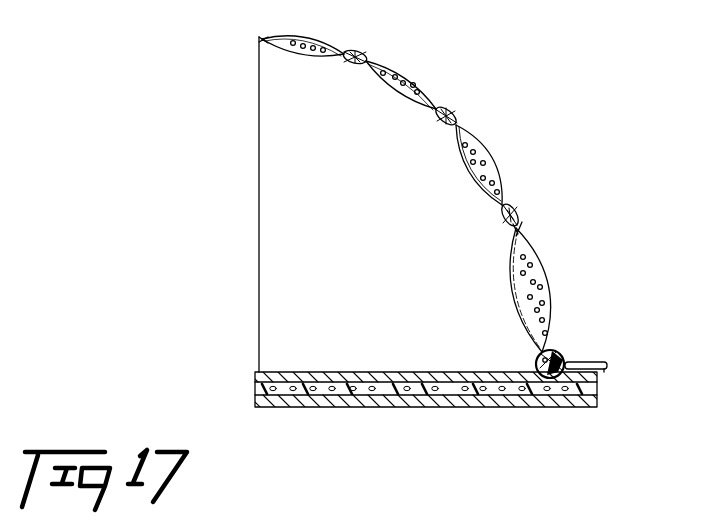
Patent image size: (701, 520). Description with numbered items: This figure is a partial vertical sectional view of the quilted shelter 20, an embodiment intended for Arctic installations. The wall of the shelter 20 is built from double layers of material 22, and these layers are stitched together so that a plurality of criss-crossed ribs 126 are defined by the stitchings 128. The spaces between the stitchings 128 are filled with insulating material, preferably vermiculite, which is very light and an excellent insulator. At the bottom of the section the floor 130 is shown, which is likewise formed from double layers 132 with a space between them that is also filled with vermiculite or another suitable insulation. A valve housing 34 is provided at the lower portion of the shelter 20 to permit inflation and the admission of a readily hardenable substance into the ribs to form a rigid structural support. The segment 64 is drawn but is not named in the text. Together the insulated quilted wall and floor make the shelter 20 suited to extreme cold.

The shelter 20 is at (470, 74).
The double layers of material 22 is at (475, 140).
The valve housing 34 is at (590, 362).
The inflatable segment 64 is at (398, 77).
The criss-crossed ribs 126 is at (517, 217).
The stitchings 128 is at (520, 233).
The floor 130 is at (340, 413).
The double layers 132 is at (378, 373).